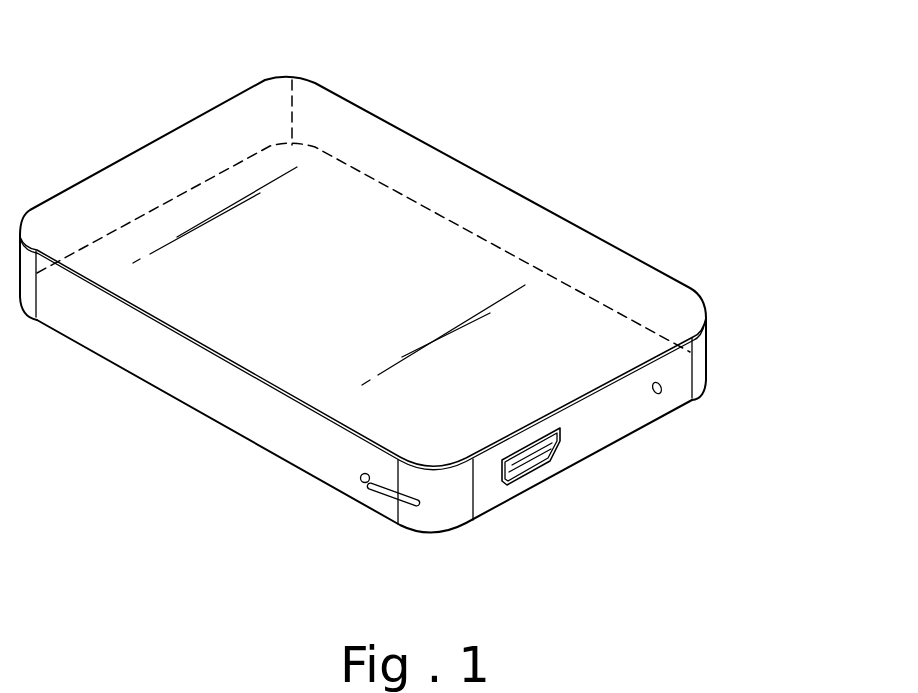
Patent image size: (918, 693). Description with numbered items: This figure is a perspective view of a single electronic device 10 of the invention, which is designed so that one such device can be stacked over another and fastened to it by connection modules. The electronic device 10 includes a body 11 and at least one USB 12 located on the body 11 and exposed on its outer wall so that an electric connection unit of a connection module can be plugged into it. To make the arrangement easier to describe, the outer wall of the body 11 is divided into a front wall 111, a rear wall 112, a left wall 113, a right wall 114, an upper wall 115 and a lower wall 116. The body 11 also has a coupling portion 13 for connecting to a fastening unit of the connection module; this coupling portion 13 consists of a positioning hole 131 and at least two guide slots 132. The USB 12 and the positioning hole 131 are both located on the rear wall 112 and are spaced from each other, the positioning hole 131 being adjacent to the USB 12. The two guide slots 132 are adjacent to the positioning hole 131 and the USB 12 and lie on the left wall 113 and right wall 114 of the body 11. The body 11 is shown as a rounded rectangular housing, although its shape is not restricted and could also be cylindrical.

The electronic device 10 is at (645, 35).
The body 11 is at (599, 226).
The front wall 111 is at (127, 183).
The rear wall 112 is at (613, 425).
The left wall 113 is at (107, 318).
The right wall 114 is at (502, 225).
The upper wall 115 is at (378, 155).
The lower wall 116 is at (220, 427).
The USB 12 is at (528, 460).
The coupling portion 13 is at (504, 463).
The positioning hole 131 is at (661, 390).
The guide slot 132 is at (367, 487).